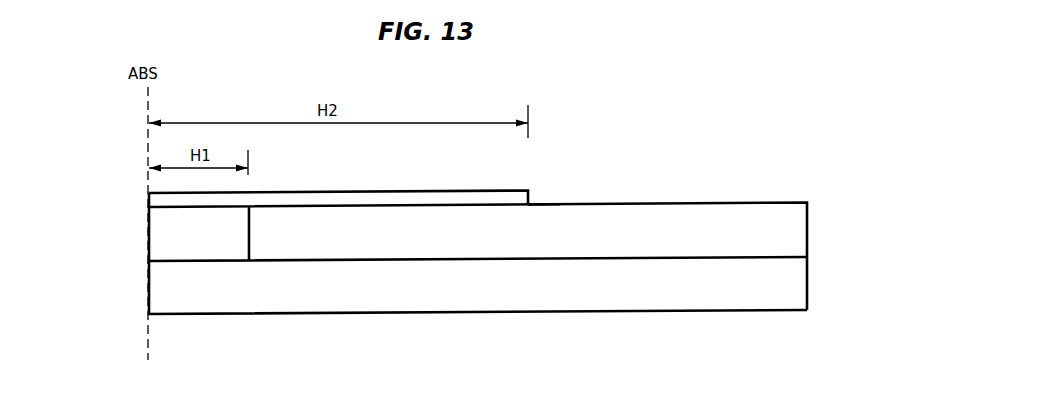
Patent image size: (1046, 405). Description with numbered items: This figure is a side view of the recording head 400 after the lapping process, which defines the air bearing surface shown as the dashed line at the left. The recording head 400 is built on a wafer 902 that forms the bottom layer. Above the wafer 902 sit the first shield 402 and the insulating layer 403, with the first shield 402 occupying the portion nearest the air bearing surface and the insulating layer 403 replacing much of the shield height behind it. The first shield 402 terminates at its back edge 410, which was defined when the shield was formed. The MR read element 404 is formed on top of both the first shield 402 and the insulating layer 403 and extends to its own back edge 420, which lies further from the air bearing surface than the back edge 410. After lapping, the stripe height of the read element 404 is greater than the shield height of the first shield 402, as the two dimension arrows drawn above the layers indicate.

The recording head 400 is at (684, 60).
The first shield 402 is at (154, 235).
The insulating layer 403 is at (757, 213).
The MR read element 404 is at (149, 201).
The back edge 410 is at (256, 241).
The back edge 420 is at (541, 196).
The wafer 902 is at (453, 300).